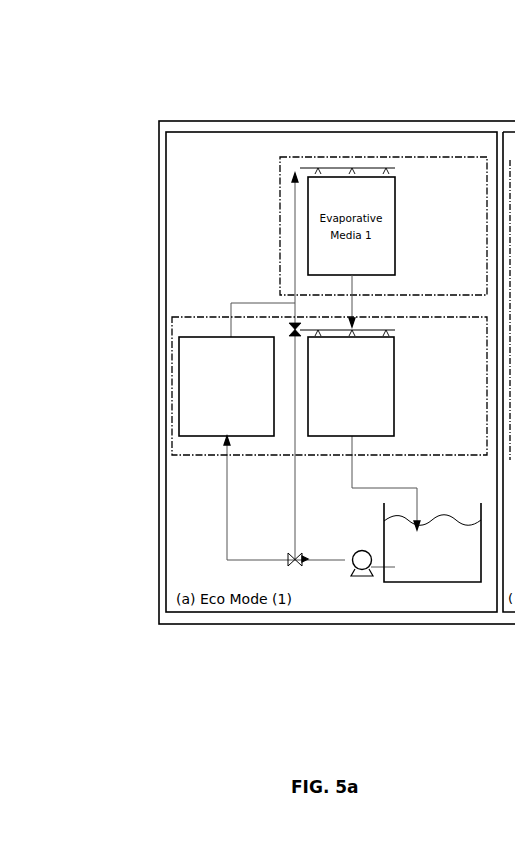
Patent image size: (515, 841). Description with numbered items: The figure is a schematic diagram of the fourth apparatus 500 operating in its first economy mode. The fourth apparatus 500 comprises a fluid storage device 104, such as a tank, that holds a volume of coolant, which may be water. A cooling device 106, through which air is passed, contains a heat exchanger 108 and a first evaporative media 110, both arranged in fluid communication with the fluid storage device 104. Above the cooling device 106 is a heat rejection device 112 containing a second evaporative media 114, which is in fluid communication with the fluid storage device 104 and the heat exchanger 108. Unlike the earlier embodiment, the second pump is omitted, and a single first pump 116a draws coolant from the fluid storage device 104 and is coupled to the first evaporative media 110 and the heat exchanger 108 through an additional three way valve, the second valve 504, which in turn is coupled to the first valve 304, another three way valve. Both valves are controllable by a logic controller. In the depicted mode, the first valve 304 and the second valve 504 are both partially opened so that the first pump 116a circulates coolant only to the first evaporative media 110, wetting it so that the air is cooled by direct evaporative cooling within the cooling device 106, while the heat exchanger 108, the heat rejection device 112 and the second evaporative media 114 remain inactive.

The fourth apparatus 500 is at (480, 132).
The heat rejection device 112 is at (414, 157).
The second evaporative media 114 is at (339, 176).
The first valve 304 is at (294, 320).
The cooling device 106 is at (216, 316).
The heat exchanger 108 is at (179, 390).
The first evaporative media 110 is at (366, 437).
The second valve 504 is at (288, 557).
The first pump 116a is at (356, 552).
The fluid storage device 104 is at (437, 583).